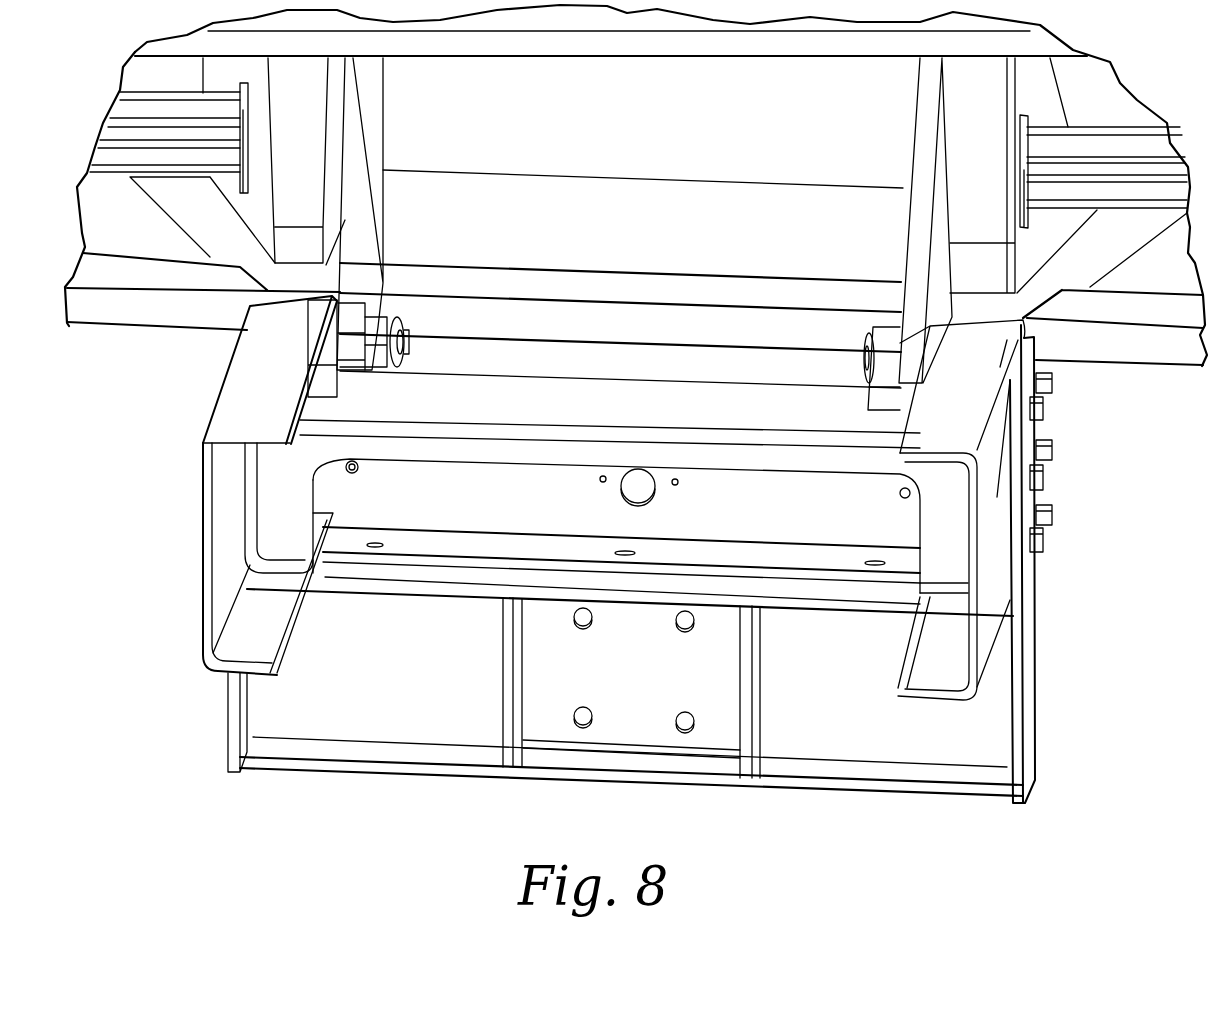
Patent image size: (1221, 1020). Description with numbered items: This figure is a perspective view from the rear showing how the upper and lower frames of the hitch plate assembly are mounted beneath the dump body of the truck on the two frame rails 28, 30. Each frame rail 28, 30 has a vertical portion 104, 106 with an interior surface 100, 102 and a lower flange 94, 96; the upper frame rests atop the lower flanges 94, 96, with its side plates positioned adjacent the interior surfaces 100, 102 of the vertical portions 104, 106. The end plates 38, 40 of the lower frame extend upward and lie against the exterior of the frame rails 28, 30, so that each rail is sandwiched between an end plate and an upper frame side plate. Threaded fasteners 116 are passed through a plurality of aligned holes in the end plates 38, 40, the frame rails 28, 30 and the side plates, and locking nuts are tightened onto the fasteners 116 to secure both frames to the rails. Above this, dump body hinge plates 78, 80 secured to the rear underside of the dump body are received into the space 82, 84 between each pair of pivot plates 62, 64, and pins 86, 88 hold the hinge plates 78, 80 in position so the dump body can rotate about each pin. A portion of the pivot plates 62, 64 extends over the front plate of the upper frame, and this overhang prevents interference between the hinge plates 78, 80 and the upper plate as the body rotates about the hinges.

The frame rail 28 is at (922, 645).
The frame rail 30 is at (273, 623).
The end plate 38 is at (1028, 628).
The end plate 40 is at (227, 713).
The pivot plate 62 is at (313, 393).
The pivot plate 64 is at (378, 385).
The dump body hinge plate 78 is at (372, 204).
The dump body hinge plate 80 is at (903, 237).
The space 82 is at (347, 383).
The space 84 is at (908, 407).
The pin 86 is at (868, 353).
The pin 88 is at (405, 338).
The lower flange 94 is at (928, 677).
The lower flange 96 is at (267, 650).
The interior surface 100 is at (967, 570).
The interior surface 102 is at (217, 528).
The vertical portion 104 is at (997, 497).
The vertical portion 106 is at (203, 488).
The threaded fastener 116 is at (1053, 383).